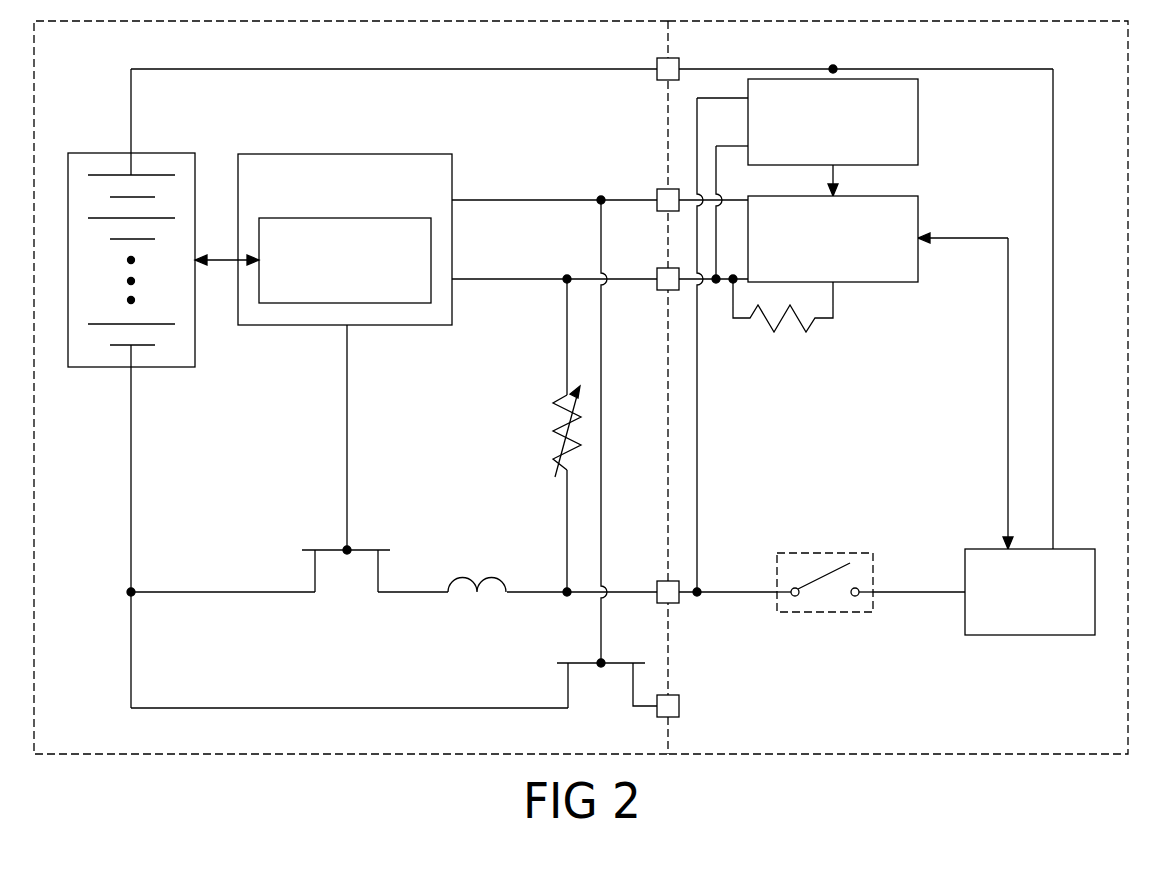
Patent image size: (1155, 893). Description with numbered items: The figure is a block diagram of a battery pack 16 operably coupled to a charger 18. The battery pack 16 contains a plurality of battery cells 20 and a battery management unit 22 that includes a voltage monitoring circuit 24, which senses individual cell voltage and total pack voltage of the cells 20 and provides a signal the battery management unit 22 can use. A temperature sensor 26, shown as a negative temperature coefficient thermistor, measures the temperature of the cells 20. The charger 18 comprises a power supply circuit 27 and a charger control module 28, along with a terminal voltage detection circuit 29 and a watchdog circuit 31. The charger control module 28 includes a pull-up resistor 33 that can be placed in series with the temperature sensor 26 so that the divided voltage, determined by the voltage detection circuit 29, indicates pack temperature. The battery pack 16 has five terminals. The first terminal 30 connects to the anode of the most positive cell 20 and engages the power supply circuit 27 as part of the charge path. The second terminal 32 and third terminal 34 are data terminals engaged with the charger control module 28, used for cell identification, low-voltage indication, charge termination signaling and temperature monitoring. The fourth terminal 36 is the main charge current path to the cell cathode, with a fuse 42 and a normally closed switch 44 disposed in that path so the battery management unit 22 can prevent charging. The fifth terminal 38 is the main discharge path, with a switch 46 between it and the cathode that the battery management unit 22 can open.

The battery pack 16 is at (120, 21).
The charger 18 is at (1058, 21).
The battery cells 20 is at (163, 153).
The battery management unit 22 is at (440, 153).
The voltage monitoring circuit 24 is at (300, 303).
The temperature sensor 26 is at (553, 458).
The power supply circuit 27 is at (1030, 635).
The charger control module 28 is at (918, 216).
The voltage detection circuit 29 is at (918, 122).
The first terminal 30 is at (662, 81).
The watchdog circuit 31 is at (883, 617).
The second terminal 32 is at (663, 189).
The pull-up resistor 33 is at (810, 323).
The third terminal 34 is at (664, 291).
The fourth terminal 36 is at (676, 603).
The fifth terminal 38 is at (672, 695).
The fuse 42 is at (449, 602).
The switch 44 is at (374, 536).
The switch 46 is at (552, 670).